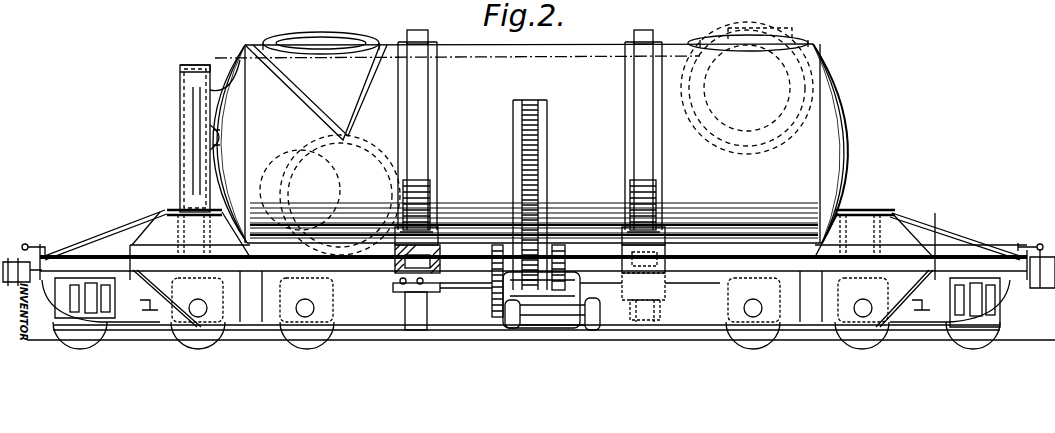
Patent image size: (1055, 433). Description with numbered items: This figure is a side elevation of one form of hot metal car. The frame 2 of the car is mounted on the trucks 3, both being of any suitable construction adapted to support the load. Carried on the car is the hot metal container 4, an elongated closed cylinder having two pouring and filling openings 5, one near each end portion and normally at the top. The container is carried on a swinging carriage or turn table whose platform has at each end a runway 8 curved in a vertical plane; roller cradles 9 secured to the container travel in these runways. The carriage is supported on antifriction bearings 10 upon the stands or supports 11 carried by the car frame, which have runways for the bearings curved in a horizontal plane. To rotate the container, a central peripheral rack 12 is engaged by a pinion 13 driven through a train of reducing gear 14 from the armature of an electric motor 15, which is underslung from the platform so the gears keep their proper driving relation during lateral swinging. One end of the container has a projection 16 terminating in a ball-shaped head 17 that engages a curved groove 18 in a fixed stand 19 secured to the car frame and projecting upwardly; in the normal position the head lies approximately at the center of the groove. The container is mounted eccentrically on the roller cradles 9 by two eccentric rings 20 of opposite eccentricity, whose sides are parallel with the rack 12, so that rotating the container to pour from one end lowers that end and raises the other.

The frame 2 is at (953, 270).
The trucks 3 is at (152, 330).
The hot metal container 4 is at (530, 138).
The pouring and filling openings 5 is at (335, 50).
The runway 8 is at (393, 274).
The roller cradles 9 is at (420, 198).
The antifriction bearings 10 is at (432, 292).
The stands or supports 11 is at (418, 322).
The central peripheral rack 12 is at (528, 102).
The pinion 13 is at (541, 300).
The train of reducing gear 14 is at (565, 258).
The electric motor 15 is at (554, 320).
The projection 16 is at (214, 140).
The ball-shaped head 17 is at (196, 135).
The curved groove 18 is at (190, 106).
The fixed stand 19 is at (180, 79).
The eccentric rings 20 is at (416, 36).